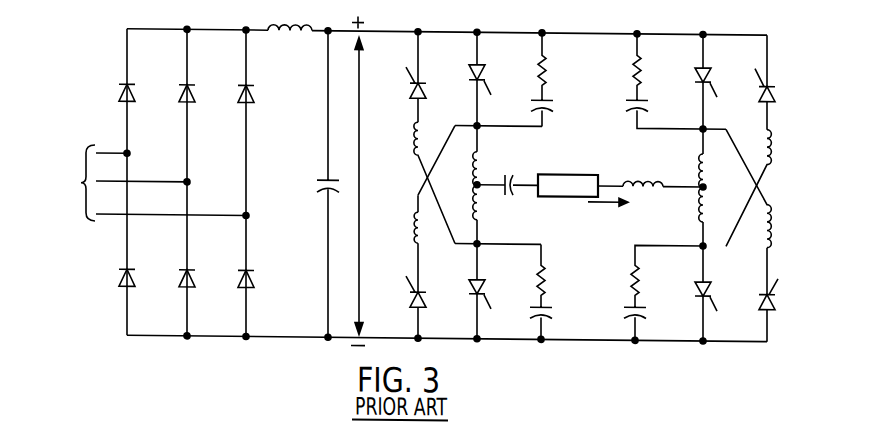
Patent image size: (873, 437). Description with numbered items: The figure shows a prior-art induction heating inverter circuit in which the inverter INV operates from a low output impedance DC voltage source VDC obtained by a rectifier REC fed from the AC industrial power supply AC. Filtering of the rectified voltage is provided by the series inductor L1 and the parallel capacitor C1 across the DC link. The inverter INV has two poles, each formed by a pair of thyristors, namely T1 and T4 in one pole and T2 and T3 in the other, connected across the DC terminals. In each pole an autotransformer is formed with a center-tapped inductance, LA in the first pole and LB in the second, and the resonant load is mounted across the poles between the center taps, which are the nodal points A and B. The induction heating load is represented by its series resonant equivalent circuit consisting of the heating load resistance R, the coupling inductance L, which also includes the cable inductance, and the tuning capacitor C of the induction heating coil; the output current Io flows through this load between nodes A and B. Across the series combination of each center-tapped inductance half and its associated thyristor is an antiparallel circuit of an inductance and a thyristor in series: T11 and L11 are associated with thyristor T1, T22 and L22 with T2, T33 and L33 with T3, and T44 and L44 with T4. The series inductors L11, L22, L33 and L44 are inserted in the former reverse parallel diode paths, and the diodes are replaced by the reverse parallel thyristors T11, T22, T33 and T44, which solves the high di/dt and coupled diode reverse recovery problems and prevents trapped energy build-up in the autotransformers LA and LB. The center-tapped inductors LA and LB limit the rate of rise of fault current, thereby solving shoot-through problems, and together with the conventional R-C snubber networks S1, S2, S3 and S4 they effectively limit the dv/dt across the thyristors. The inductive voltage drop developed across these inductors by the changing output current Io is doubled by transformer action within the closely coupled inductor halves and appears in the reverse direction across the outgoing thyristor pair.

The rectifier REC is at (232, 192).
The AC industrial power supply AC is at (63, 182).
The series inductor L1 is at (288, 35).
The parallel capacitor C1 is at (316, 179).
The DC voltage source VDC is at (359, 180).
The reverse parallel thyristor T11 is at (407, 85).
The thyristor T1 is at (468, 75).
The series inductor L11 is at (420, 140).
The series inductor L44 is at (421, 223).
The reverse parallel thyristor T44 is at (408, 291).
The thyristor T4 is at (467, 280).
The center tapped inductor LA is at (478, 166).
The nodal point A is at (468, 186).
The tuning capacitor C is at (508, 166).
The heating load resistance R is at (562, 169).
The coupling inductance L is at (650, 182).
The output current Io is at (608, 213).
The inverter INV is at (599, 143).
The snubber network S1 is at (579, 92).
The snubber network S2 is at (622, 93).
The snubber network S3 is at (619, 297).
The snubber network S4 is at (574, 298).
The thyristor T2 is at (695, 68).
The reverse parallel thyristor T22 is at (757, 84).
The series inductor L22 is at (763, 126).
The center tapped inductor LB is at (700, 160).
The nodal point B is at (711, 190).
The thyristor T3 is at (692, 280).
The reverse parallel thyristor T33 is at (753, 292).
The series inductor L33 is at (760, 230).